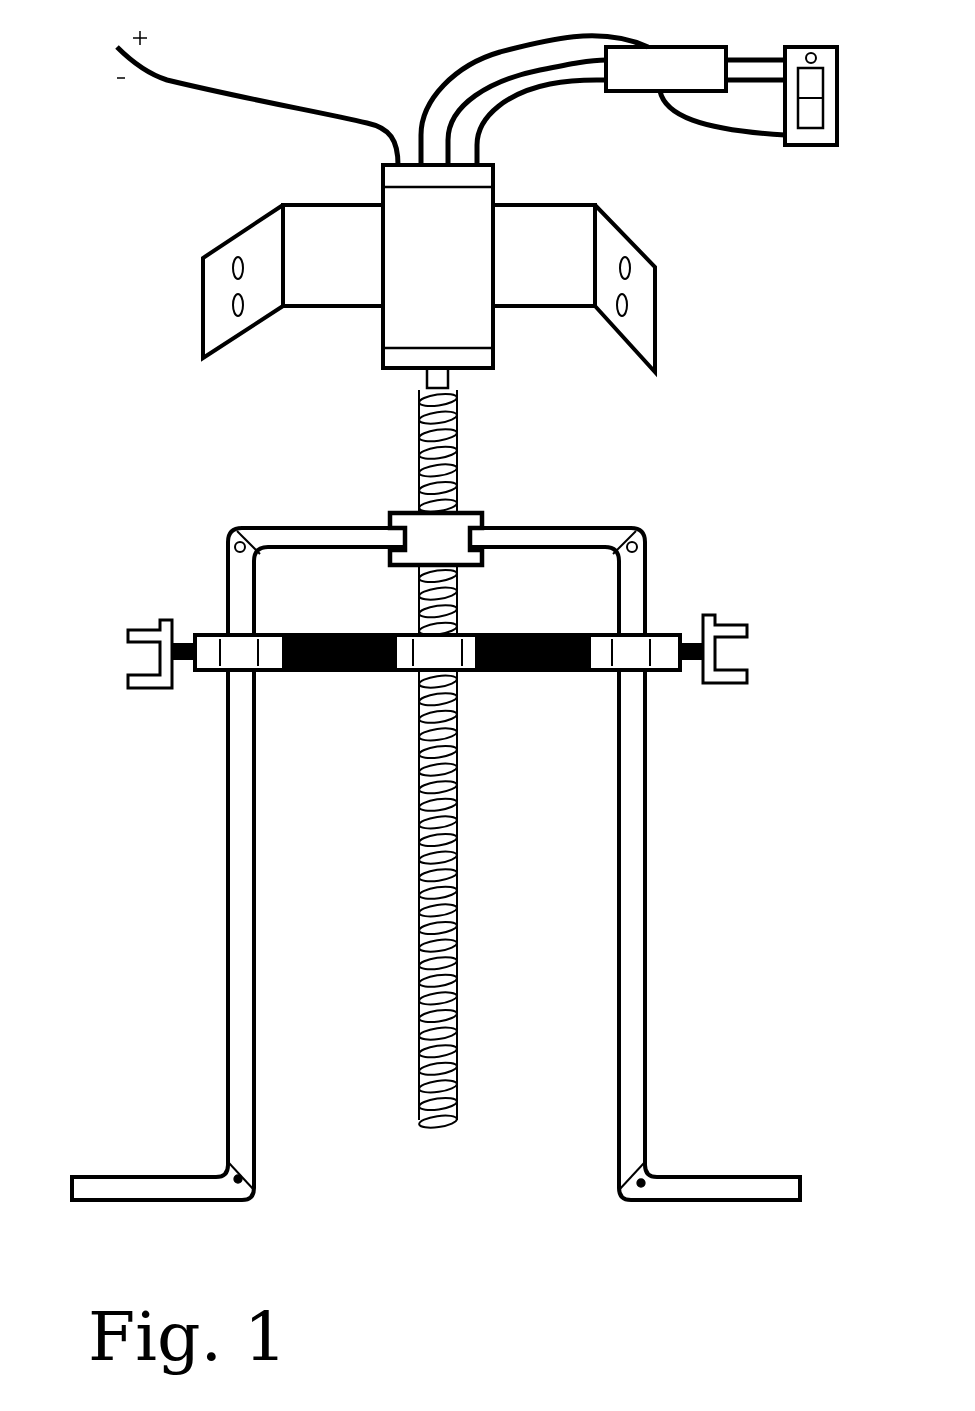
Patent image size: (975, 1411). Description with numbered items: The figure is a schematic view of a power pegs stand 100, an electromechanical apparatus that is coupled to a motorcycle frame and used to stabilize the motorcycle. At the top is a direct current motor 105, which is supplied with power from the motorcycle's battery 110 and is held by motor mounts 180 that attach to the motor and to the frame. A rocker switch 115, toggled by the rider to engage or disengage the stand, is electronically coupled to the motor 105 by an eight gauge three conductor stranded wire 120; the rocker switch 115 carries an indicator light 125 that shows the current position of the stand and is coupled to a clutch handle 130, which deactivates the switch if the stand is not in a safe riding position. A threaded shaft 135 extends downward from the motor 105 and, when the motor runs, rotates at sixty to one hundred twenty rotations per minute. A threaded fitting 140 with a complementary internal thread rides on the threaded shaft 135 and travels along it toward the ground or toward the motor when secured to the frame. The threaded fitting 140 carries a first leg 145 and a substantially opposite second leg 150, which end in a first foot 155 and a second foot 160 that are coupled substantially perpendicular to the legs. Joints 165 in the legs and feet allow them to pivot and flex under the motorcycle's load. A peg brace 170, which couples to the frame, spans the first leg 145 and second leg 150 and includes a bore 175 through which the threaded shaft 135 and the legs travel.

The power pegs stand 100 is at (392, 62).
The direct current motor 105 is at (493, 180).
The motorcycle's battery 110 is at (163, 83).
The rocker switch 115 is at (820, 147).
The three conductor stranded wire 120 is at (545, 40).
The indicator light 125 is at (812, 52).
The clutch handle 130 is at (672, 47).
The threaded shaft 135 is at (463, 870).
The threaded fitting 140 is at (488, 514).
The first leg 145 is at (364, 527).
The second leg 150 is at (560, 527).
The first foot 155 is at (155, 1176).
The second foot 160 is at (727, 1176).
The joints 165 is at (230, 546).
The peg brace 170 is at (495, 634).
The bore 175 is at (240, 634).
The motor mounts 180 is at (240, 238).